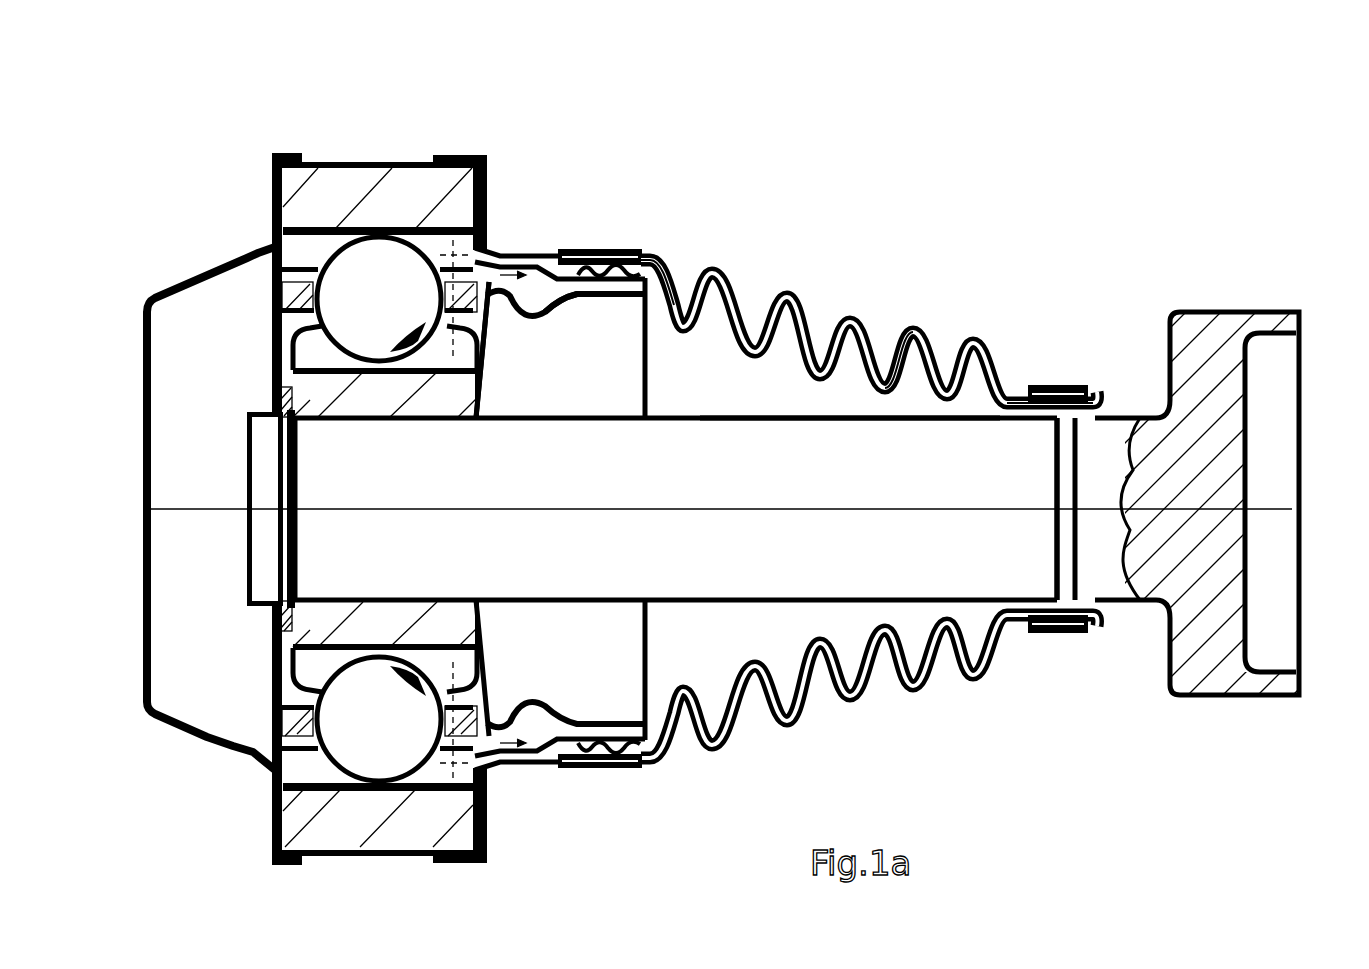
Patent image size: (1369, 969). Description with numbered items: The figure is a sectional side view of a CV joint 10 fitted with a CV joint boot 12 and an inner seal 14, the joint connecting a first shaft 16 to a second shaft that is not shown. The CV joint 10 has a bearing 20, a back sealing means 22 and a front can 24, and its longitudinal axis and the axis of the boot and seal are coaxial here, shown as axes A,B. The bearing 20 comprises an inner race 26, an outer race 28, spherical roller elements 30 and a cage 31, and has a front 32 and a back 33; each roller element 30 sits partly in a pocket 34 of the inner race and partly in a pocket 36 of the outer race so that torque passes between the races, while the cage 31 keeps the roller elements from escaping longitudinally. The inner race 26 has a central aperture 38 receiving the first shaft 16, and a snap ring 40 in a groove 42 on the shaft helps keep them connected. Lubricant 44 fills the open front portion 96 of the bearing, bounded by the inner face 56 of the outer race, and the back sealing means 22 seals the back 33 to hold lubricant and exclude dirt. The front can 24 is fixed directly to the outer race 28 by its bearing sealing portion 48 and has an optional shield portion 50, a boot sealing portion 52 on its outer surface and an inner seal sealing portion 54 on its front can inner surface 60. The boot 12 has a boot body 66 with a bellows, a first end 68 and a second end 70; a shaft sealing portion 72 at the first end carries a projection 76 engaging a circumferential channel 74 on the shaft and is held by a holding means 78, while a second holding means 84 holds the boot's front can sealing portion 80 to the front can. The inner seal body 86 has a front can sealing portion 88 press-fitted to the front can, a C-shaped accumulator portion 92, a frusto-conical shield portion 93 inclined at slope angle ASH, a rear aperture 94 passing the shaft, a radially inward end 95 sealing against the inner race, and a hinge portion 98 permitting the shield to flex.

The CV joint 10 is at (562, 108).
The CV joint boot 12 is at (790, 299).
The inner seal 14 is at (652, 372).
The first shaft 16 is at (842, 417).
The bearing 20 is at (410, 165).
The back sealing means 22 is at (146, 690).
The front can 24 is at (492, 160).
The inner race 26 is at (277, 390).
The outer race 28 is at (302, 163).
The roller elements 30 is at (302, 325).
The cage 31 is at (275, 299).
The front 32 is at (735, 702).
The back 33 is at (244, 619).
The pocket 34 is at (319, 356).
The pocket 36 is at (272, 212).
The central aperture 38 is at (326, 548).
The snap ring 40 is at (272, 424).
The groove 42 is at (288, 473).
The lubricant 44 is at (520, 264).
The bearing sealing portion 48 is at (470, 158).
The shield portion 50 is at (500, 263).
The boot sealing portion 52 is at (572, 257).
The inner seal sealing portion 54 is at (590, 285).
The inner face 56 is at (334, 232).
The front can inner surface 60 is at (566, 302).
The boot body 66 is at (910, 330).
The first end 68 is at (1017, 398).
The second end 70 is at (664, 268).
The shaft sealing portion 72 is at (1101, 392).
The circumferential channel 74 is at (1065, 460).
The projection 76 is at (1058, 428).
The holding means 78 is at (1050, 386).
The front can sealing portion 80 is at (630, 250).
The second holding means 84 is at (604, 257).
The inner seal body 86 is at (530, 770).
The front can sealing portion 88 is at (600, 726).
The accumulator portion 92 is at (545, 282).
The shield portion 93 is at (485, 362).
The rear aperture 94 is at (380, 490).
The radially inward end 95 is at (485, 383).
The open front portion 96 is at (495, 250).
The hinge portion 98 is at (505, 308).
The longitudinal axes A,B is at (1280, 507).
The slope angle ASH is at (496, 405).